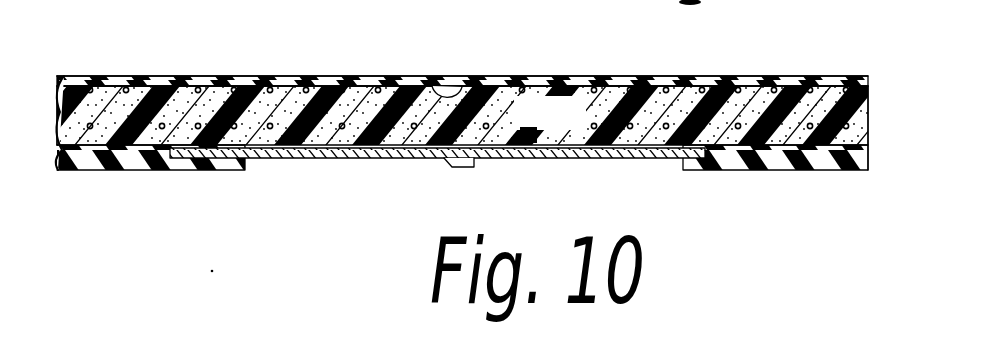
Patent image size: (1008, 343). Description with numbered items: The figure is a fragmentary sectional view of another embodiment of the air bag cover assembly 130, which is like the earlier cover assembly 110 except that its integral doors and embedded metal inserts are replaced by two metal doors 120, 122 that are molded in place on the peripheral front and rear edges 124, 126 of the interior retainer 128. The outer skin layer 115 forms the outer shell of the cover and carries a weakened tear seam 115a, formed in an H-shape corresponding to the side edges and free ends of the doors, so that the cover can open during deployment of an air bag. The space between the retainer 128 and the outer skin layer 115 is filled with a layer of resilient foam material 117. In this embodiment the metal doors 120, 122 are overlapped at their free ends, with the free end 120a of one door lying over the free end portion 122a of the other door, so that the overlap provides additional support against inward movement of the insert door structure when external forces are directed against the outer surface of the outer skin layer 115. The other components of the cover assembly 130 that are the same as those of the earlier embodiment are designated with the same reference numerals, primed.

The cover assembly 110 is at (266, 73).
The outer skin layer 115 is at (323, 84).
The weakened tear seam 115a is at (433, 86).
The layer of resilient foam material 117 is at (103, 100).
The metal door 120 is at (333, 159).
The free end of metal door 120a is at (471, 165).
The metal door 122 is at (570, 158).
The portion of intermediate layer 122a is at (468, 133).
The peripheral front edge 124 is at (217, 167).
The peripheral rear edge 126 is at (704, 163).
The interior retainer 128 is at (88, 152).
The cover assembly 130 is at (810, 71).